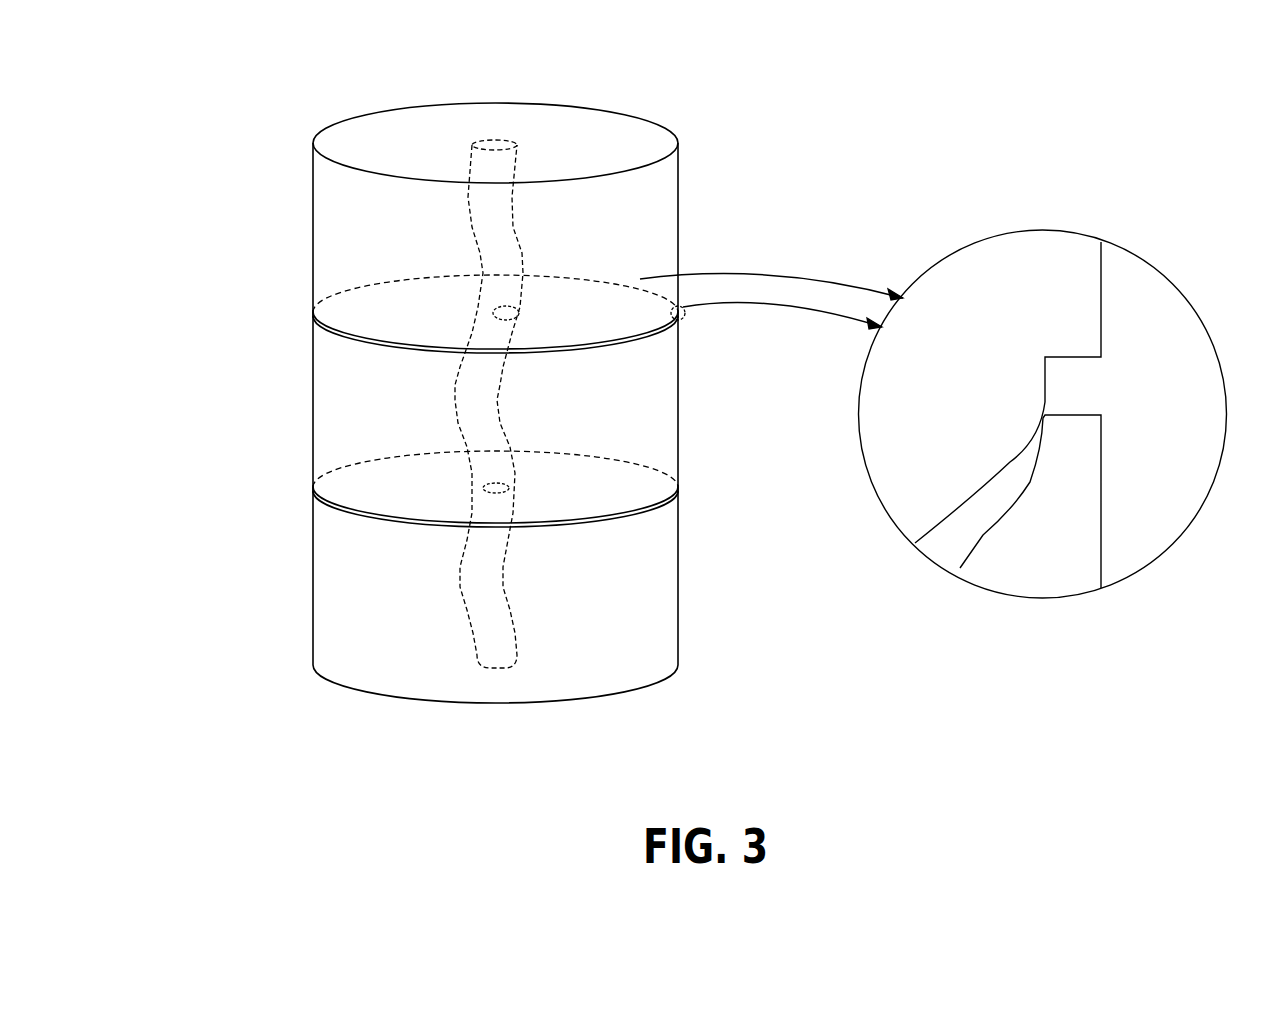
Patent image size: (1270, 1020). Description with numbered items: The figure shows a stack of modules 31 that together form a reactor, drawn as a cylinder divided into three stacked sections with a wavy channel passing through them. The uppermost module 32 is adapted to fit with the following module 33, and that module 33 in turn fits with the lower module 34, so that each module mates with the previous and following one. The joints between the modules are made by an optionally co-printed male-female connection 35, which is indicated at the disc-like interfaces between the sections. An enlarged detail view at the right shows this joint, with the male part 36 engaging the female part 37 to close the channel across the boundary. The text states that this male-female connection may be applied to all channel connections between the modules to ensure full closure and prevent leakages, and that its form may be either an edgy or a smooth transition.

The stack of modules 31 is at (298, 139).
The module 32 is at (350, 254).
The module 33 is at (368, 435).
The module 34 is at (372, 615).
The male-female connection 35 is at (517, 307).
The male part of connection 36 is at (1058, 293).
The female part of connection 37 is at (1143, 322).